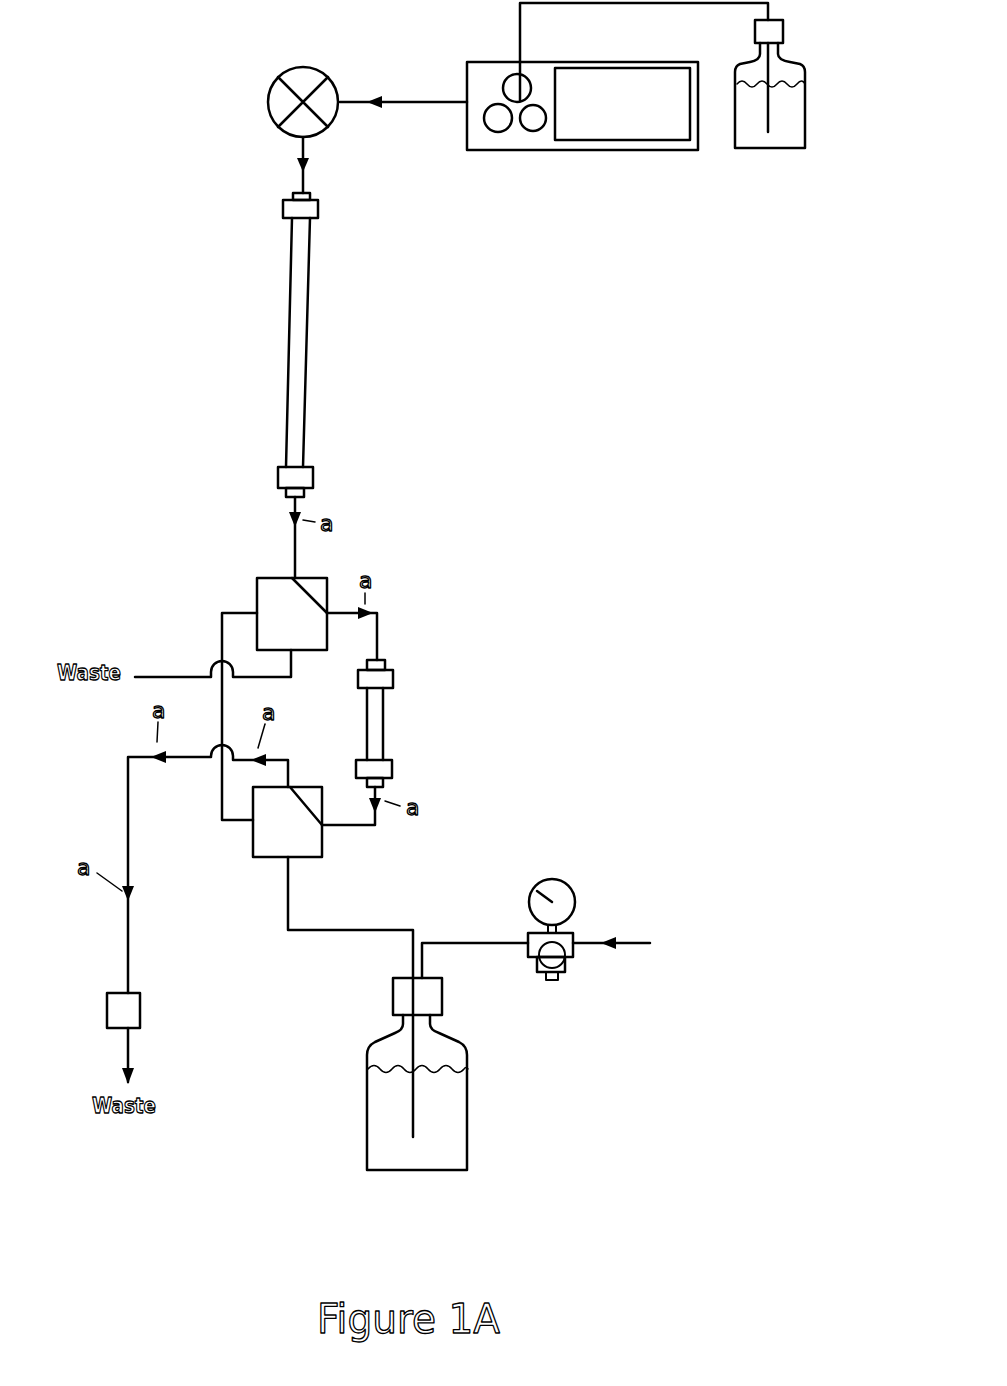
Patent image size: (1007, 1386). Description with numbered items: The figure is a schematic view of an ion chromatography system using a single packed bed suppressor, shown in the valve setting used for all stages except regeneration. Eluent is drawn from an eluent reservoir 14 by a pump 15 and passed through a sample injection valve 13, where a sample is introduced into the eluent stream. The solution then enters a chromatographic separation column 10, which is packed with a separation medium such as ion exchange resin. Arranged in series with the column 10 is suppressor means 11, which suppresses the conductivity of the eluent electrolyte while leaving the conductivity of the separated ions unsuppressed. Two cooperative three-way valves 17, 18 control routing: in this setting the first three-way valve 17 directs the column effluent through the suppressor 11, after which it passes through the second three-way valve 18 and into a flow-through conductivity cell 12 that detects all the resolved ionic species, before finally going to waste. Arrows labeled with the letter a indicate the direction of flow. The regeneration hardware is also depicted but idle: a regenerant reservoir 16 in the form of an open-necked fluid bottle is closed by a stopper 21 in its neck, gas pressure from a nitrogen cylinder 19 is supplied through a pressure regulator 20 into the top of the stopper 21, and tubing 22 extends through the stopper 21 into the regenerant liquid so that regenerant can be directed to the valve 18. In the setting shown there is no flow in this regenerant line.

The chromatographic separation column 10 is at (298, 280).
The suppressor means 11 is at (396, 660).
The conductivity cell 12 is at (131, 1003).
The sample injection valve 13 is at (272, 83).
The eluent reservoir 14 is at (783, 68).
The pump 15 is at (635, 115).
The regenerant reservoir 16 is at (360, 1168).
The three-way valve 17 is at (258, 572).
The three-way valve 18 is at (233, 840).
The nitrogen cylinder 19 is at (630, 945).
The pressure regulator 20 is at (531, 891).
The stopper 21 is at (448, 998).
The tubing 22 is at (409, 1048).